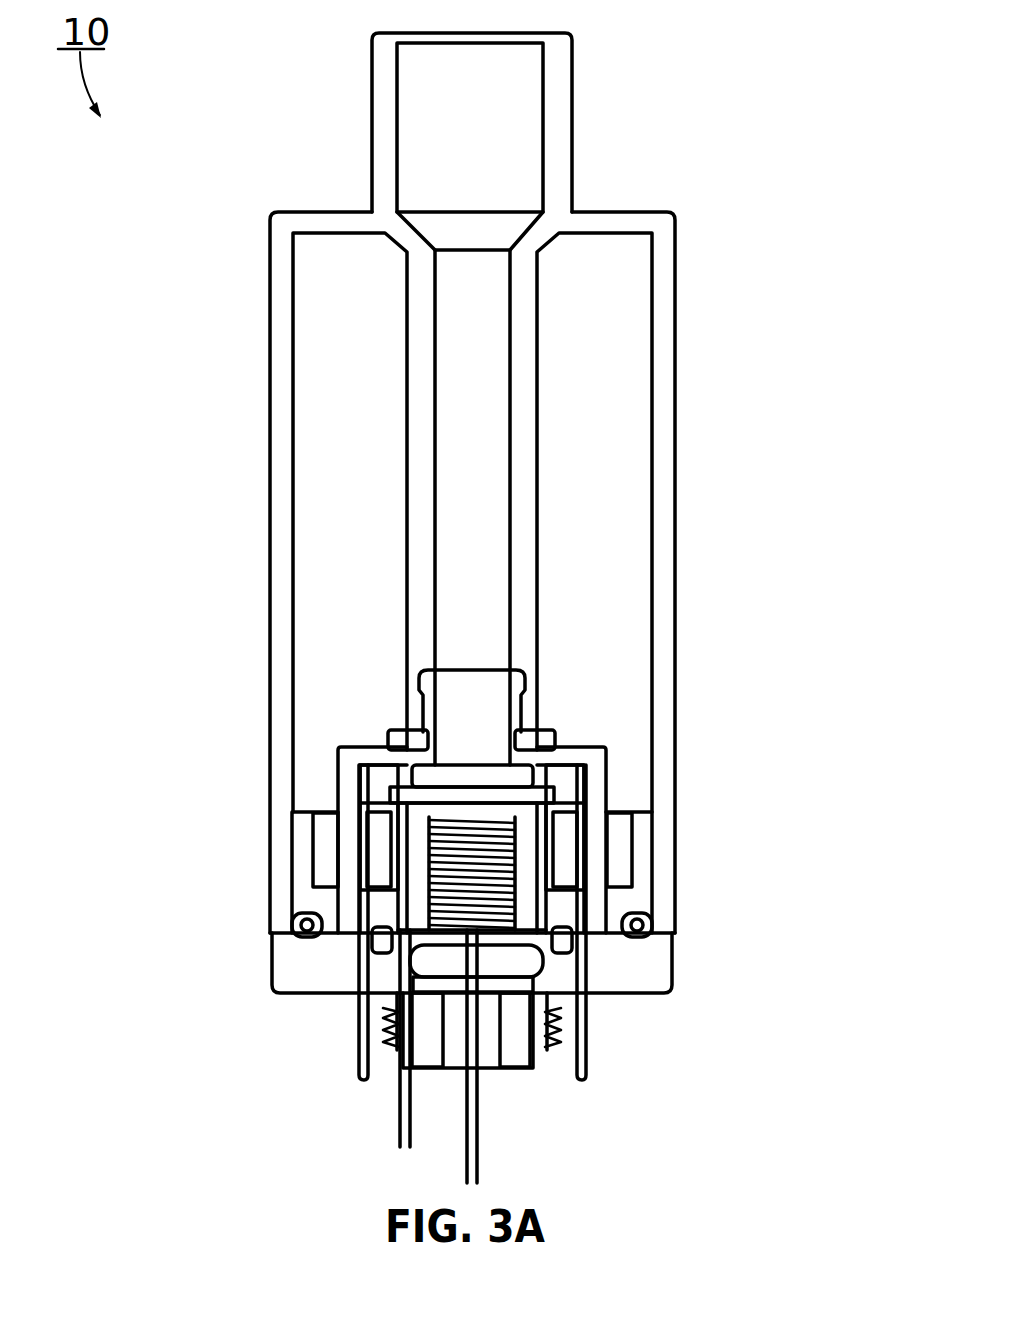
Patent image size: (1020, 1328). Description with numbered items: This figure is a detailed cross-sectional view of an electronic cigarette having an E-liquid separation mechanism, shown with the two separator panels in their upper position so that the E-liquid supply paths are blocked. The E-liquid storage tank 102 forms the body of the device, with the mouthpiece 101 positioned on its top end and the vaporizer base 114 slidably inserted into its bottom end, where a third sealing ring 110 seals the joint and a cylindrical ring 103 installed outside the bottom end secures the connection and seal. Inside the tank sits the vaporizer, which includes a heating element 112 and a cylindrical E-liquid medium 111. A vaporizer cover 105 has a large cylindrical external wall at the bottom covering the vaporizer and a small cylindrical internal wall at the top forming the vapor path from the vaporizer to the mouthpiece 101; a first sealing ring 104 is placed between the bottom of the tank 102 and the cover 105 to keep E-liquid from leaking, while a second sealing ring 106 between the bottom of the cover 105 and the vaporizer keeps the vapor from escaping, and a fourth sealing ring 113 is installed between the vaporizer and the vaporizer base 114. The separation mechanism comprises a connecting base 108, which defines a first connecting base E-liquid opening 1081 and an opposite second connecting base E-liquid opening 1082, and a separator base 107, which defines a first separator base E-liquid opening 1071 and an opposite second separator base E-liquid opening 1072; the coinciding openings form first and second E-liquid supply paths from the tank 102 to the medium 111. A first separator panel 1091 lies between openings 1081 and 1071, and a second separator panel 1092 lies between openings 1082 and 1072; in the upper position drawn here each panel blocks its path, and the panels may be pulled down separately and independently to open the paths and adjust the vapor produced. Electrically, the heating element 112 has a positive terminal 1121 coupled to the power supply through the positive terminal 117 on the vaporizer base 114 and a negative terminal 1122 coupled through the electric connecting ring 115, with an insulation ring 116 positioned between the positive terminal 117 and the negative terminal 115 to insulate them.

The mouthpiece 101 is at (575, 130).
The E-liquid storage tank 102 is at (675, 482).
The cylindrical ring 103 is at (675, 902).
The first sealing ring 104 is at (553, 737).
The vaporizer cover 105 is at (583, 755).
The second sealing ring 106 is at (545, 800).
The separator base 107 is at (592, 825).
The first separator base E-liquid opening 1071 is at (350, 865).
The second separator base E-liquid opening 1072 is at (603, 848).
The connecting base 108 is at (410, 821).
The first connecting base E-liquid opening 1081 is at (375, 852).
The second connecting base E-liquid opening 1082 is at (565, 870).
The first separator panel 1091 is at (362, 1028).
The second separator panel 1092 is at (585, 1067).
The third sealing ring 110 is at (670, 933).
The cylindrical E-liquid medium 111 is at (417, 905).
The heating element 112 is at (465, 836).
The positive terminal 1121 is at (473, 1122).
The negative terminal 1122 is at (403, 1088).
The fourth sealing ring 113 is at (583, 953).
The vaporizer base 114 is at (672, 962).
The electric connecting ring 115 is at (555, 1022).
The insulation ring 116 is at (528, 1057).
The positive terminal 117 is at (483, 1065).